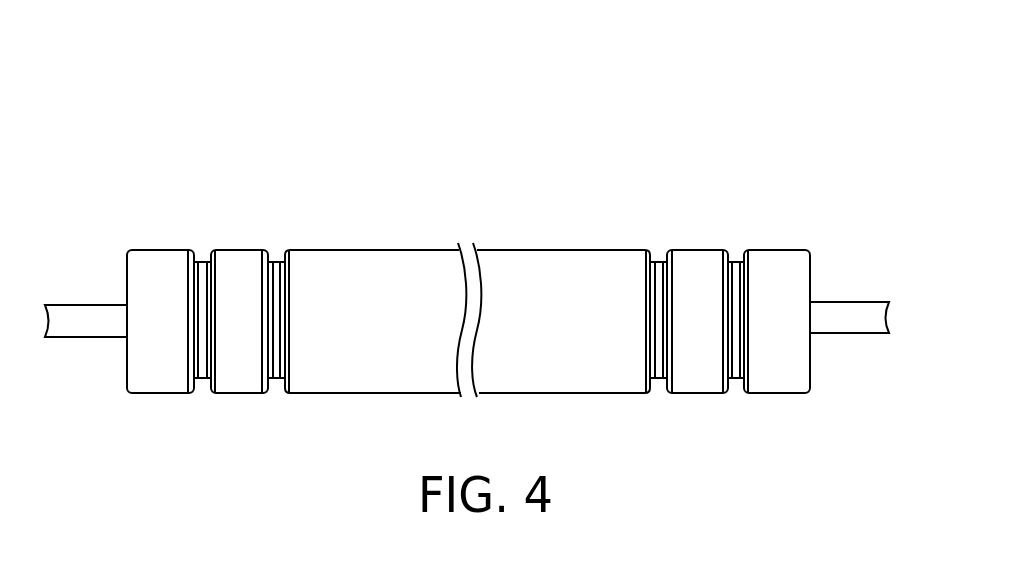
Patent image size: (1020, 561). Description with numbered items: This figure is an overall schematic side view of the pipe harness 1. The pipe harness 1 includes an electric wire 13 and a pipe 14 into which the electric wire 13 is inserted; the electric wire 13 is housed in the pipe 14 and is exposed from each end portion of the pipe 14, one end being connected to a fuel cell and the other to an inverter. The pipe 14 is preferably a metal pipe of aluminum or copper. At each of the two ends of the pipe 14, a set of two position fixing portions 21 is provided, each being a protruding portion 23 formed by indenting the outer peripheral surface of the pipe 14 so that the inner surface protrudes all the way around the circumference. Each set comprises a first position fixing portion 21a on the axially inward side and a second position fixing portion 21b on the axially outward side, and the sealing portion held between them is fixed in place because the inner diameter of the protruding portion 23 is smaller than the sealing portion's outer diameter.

The pipe harness 1 is at (216, 131).
The electric wire 13 is at (846, 302).
The pipe 14 is at (426, 250).
The position fixing portion 21 is at (536, 273).
The first position fixing portion 21a is at (276, 262).
The second position fixing portion 21b is at (202, 262).
The protruding portion 23 is at (536, 273).